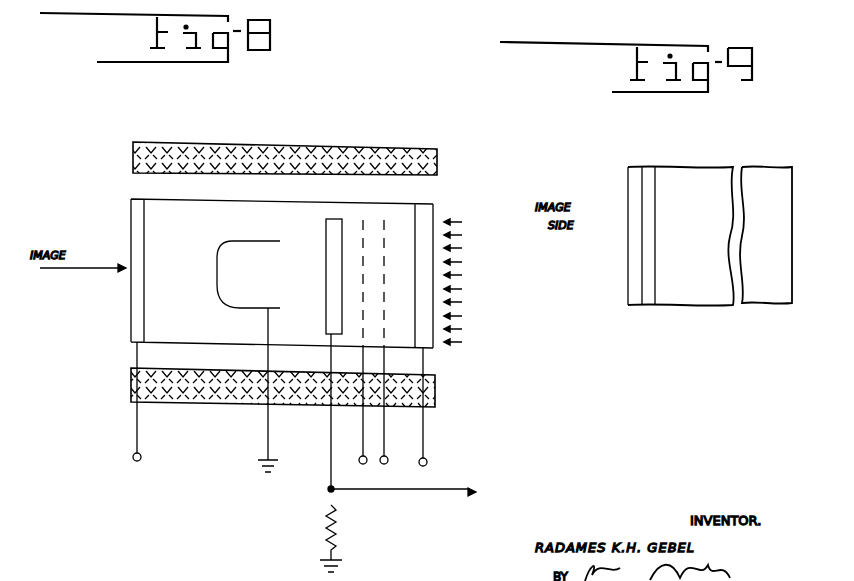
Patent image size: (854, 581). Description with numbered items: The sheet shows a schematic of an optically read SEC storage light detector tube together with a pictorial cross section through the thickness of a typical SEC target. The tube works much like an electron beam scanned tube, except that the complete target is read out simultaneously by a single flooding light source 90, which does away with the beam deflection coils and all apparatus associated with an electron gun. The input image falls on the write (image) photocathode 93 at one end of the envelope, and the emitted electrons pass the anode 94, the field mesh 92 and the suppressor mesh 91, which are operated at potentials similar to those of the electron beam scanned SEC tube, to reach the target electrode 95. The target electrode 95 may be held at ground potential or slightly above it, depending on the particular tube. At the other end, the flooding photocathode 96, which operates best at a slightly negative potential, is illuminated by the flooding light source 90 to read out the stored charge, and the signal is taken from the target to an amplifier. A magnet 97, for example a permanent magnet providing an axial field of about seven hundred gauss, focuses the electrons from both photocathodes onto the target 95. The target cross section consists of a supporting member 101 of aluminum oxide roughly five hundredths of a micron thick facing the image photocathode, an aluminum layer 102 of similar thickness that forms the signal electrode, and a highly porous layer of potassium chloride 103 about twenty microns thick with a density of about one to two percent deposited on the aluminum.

In FIG. 8, the flooding light source 90 is at (460, 344).
In FIG. 8, the suppressor mesh 91 is at (384, 228).
In FIG. 8, the field mesh 92 is at (364, 228).
In FIG. 8, the write (image) photocathode 93 is at (131, 323).
In FIG. 8, the anode 94 is at (250, 241).
In FIG. 8, the target electrode 95 is at (324, 326).
In FIG. 8, the flooding photocathode 96 is at (433, 218).
In FIG. 8, the magnet 97 is at (415, 150).
In FIG. 9, the supporting member 101 is at (630, 305).
In FIG. 9, the layer of aluminum 102 is at (646, 305).
In FIG. 9, the layer of potassium chloride 103 is at (712, 305).